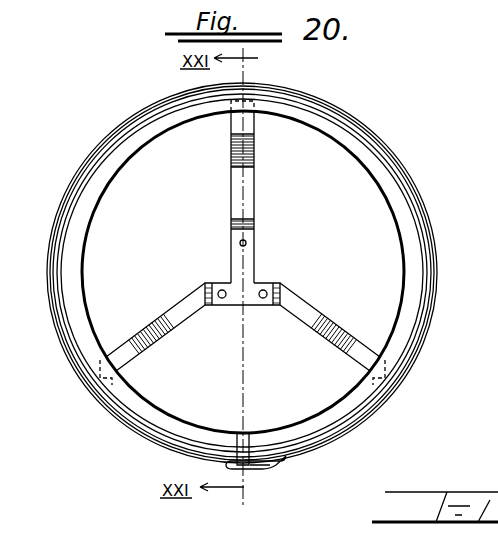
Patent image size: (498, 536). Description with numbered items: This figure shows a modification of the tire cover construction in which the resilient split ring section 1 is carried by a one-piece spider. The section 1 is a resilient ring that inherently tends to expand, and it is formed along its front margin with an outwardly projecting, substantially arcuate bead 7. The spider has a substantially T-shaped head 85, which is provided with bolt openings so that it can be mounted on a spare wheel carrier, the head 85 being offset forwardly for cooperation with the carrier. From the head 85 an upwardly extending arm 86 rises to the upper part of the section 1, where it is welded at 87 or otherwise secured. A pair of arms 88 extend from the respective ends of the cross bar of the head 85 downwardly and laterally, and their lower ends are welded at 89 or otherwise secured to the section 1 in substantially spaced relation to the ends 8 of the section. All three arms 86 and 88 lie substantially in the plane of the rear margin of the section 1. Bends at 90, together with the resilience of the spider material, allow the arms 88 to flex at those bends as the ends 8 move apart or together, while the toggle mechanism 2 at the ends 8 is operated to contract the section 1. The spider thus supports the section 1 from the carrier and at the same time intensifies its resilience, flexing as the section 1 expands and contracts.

The bead 7 is at (85, 155).
The split ring section 1 is at (120, 189).
The weld 87 is at (236, 112).
The upwardly extending arm 86 is at (257, 186).
The T-shaped head 85 is at (255, 267).
The bends 90 is at (269, 307).
The arms 88 is at (153, 330).
The weld 89 is at (98, 375).
The ends 8 is at (250, 434).
The toggle mechanism 2 is at (292, 472).